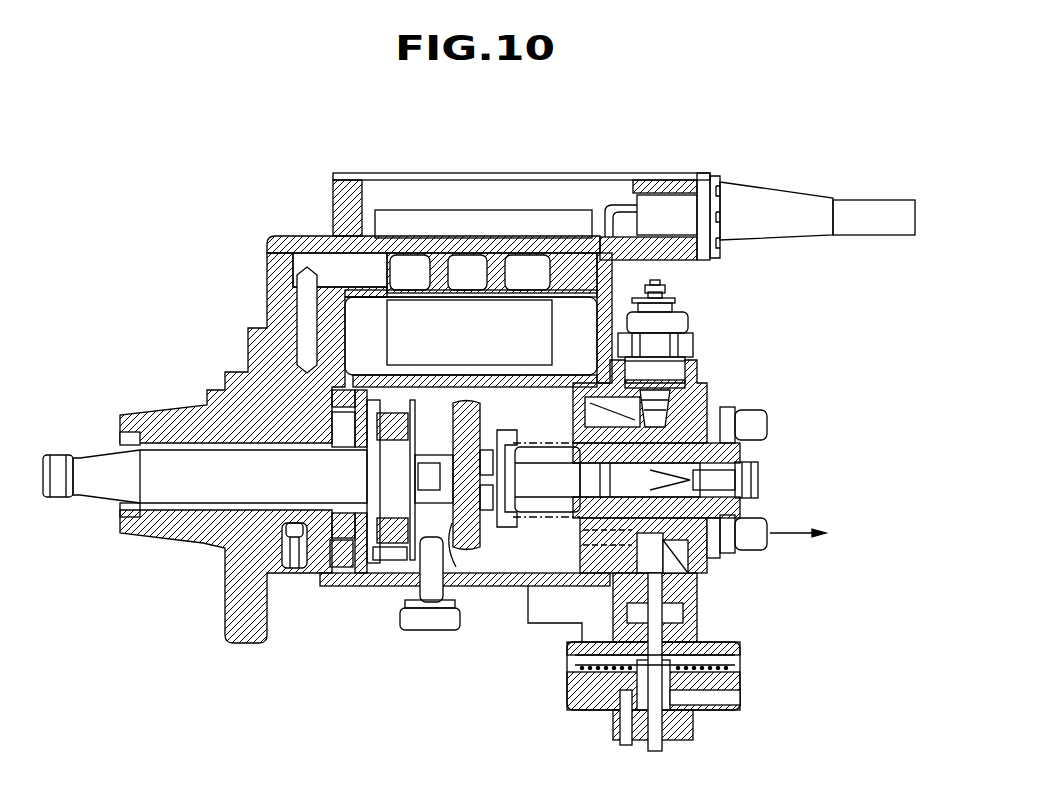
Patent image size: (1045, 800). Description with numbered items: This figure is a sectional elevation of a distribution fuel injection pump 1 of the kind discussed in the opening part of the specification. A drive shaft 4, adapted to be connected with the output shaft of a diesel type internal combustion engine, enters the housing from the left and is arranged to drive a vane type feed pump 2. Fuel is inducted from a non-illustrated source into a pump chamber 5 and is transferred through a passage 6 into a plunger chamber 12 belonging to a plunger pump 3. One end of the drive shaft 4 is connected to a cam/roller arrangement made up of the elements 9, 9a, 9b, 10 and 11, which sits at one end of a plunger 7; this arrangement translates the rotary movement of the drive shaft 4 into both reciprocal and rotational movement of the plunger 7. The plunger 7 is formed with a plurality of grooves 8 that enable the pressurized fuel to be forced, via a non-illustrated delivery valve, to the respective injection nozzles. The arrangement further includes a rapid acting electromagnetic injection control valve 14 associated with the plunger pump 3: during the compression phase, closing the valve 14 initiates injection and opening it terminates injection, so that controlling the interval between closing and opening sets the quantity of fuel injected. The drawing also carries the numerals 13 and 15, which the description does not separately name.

The distribution fuel injection pump 1 is at (205, 543).
The vane type feed pump 2 is at (345, 535).
The plunger pump 3 is at (690, 463).
The drive shaft 4 is at (170, 490).
The pump chamber 5 is at (507, 557).
The passage 6 is at (623, 410).
The plunger 7 is at (670, 407).
The grooves 8 is at (713, 507).
The cam/roller arrangement element 9 is at (470, 550).
The cam/roller arrangement element 9a is at (344, 567).
The cam/roller arrangement element 9b is at (482, 512).
The cam/roller arrangement element 10 is at (420, 478).
The cam/roller arrangement element 11 is at (454, 570).
The plunger chamber 12 is at (758, 480).
The plunger 13 is at (687, 557).
The rapid acting electromagnetic injection control valve 14 is at (733, 697).
The bracket 15 is at (597, 575).